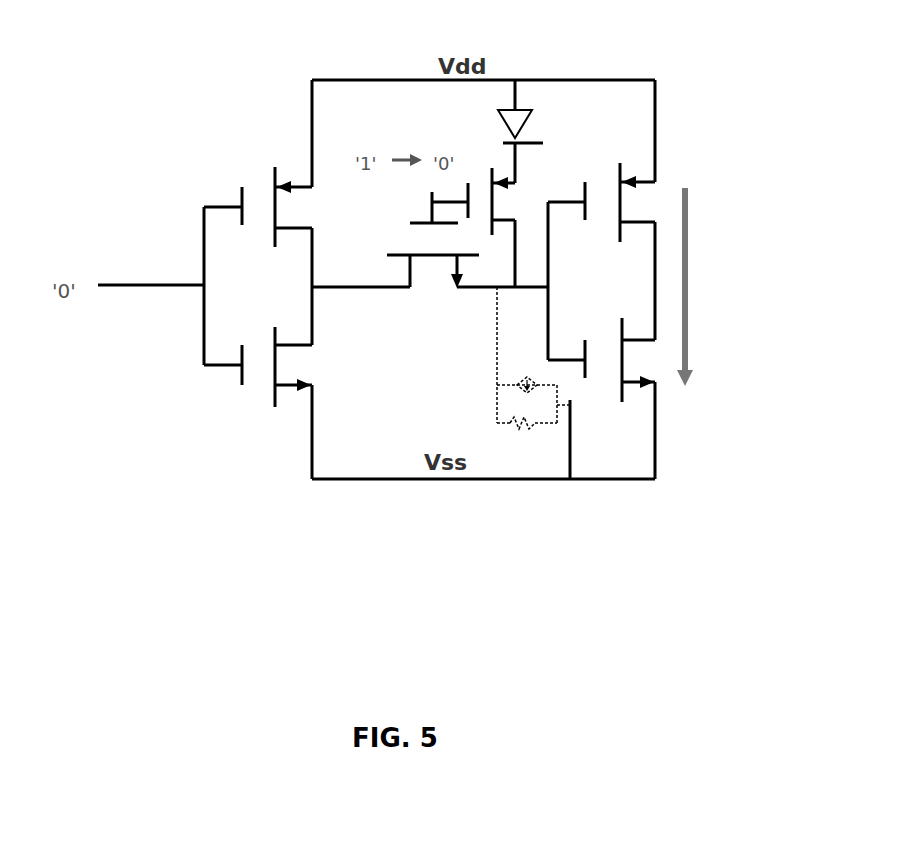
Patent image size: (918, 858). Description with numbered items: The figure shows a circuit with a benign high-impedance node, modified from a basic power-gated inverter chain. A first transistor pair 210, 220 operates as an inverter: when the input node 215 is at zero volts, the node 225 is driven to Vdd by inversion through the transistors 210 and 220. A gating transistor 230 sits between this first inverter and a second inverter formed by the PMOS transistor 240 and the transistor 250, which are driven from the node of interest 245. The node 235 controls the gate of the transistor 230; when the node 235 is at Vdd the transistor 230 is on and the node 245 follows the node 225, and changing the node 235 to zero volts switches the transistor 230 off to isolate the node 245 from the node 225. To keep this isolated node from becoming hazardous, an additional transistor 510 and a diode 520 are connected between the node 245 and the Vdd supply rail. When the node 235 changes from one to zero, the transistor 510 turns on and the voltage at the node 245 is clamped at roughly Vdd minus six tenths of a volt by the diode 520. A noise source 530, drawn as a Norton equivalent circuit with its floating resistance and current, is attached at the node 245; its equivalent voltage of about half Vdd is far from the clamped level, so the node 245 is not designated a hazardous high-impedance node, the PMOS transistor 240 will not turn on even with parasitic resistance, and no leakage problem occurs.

The transistor 210 is at (242, 165).
The node 215 is at (187, 272).
The transistor 220 is at (240, 415).
The node 225 is at (322, 278).
The transistor 230 is at (425, 312).
The node 235 is at (415, 180).
The PMOS transistor 240 is at (668, 198).
The node of interest 245 is at (565, 287).
The transistor 250 is at (668, 347).
The additional transistor 510 is at (478, 163).
The diode 520 is at (540, 93).
The noise source 530 is at (544, 450).